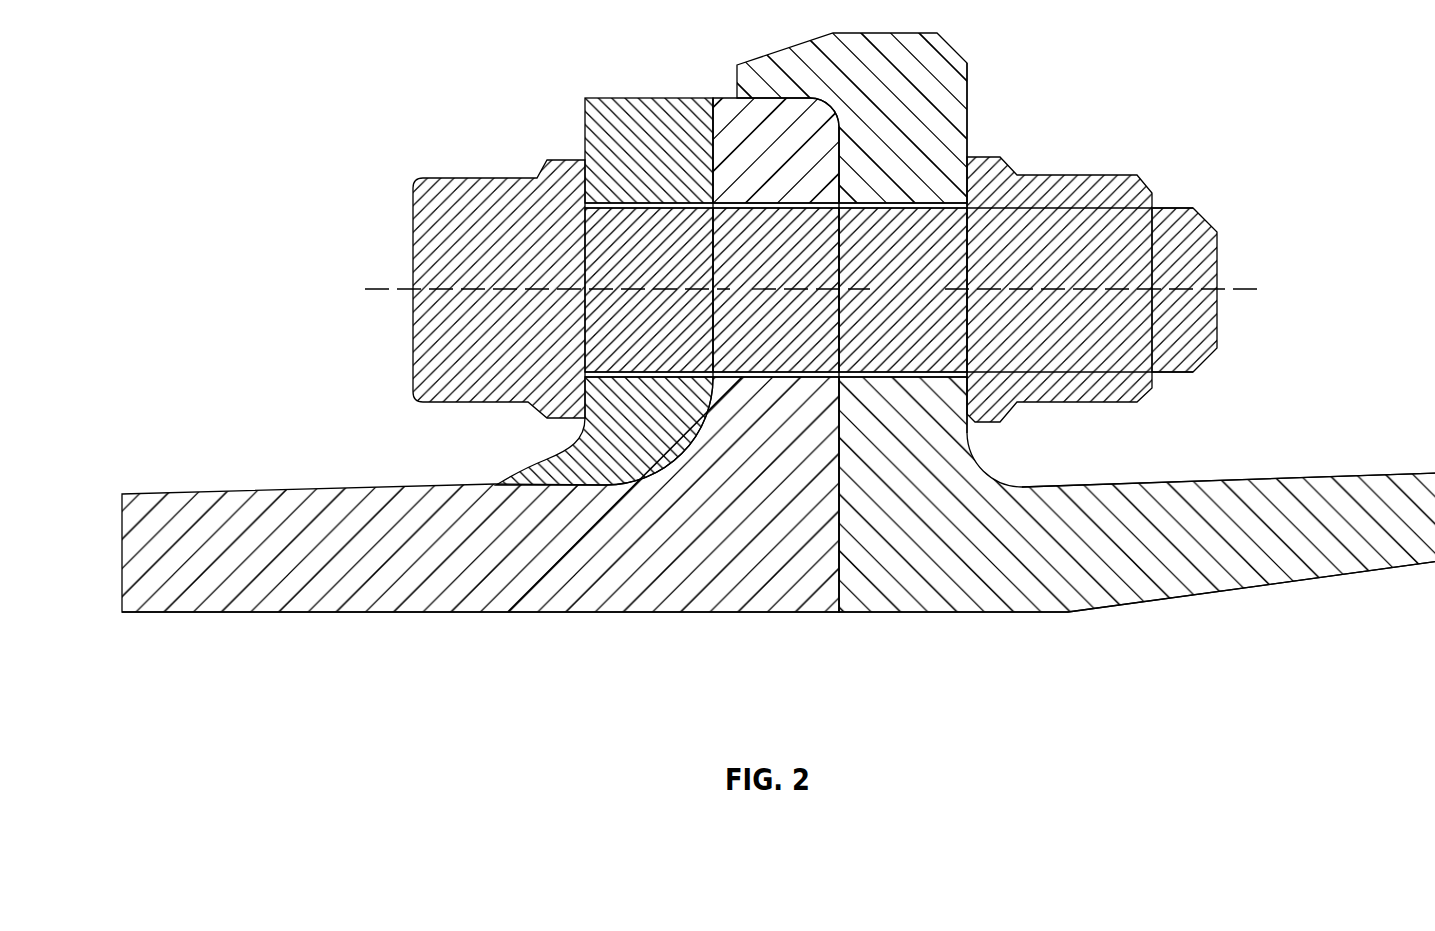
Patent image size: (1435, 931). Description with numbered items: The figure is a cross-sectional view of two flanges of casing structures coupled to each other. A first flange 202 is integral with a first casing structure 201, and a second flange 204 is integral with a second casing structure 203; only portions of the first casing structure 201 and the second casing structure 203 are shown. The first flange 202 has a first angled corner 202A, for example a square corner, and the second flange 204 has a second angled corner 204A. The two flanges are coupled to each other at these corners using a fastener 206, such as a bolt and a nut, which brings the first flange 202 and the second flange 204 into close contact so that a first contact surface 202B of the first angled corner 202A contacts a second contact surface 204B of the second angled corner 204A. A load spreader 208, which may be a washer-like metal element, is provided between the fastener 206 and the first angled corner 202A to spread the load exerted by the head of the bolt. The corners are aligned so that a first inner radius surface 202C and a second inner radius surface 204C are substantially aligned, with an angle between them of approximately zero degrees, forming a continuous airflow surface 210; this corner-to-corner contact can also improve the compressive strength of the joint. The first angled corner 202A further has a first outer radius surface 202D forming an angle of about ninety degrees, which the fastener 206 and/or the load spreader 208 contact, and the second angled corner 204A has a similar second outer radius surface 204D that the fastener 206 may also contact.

The first casing structure 201 is at (277, 619).
The first flange 202 is at (667, 623).
The first angled corner 202A is at (790, 581).
The first contact surface 202B is at (838, 510).
The first inner radius surface 202C is at (510, 613).
The first outer radius surface 202D is at (548, 484).
The second casing structure 203 is at (1202, 606).
The second flange 204 is at (986, 633).
The second angled corner 204A is at (856, 594).
The second contact surface 204B is at (841, 552).
The second inner radius surface 204C is at (1070, 613).
The second outer radius surface 204D is at (1000, 478).
The fastener 206 is at (431, 184).
The load spreader 208 is at (610, 153).
The continuous airflow surface 210 is at (732, 613).